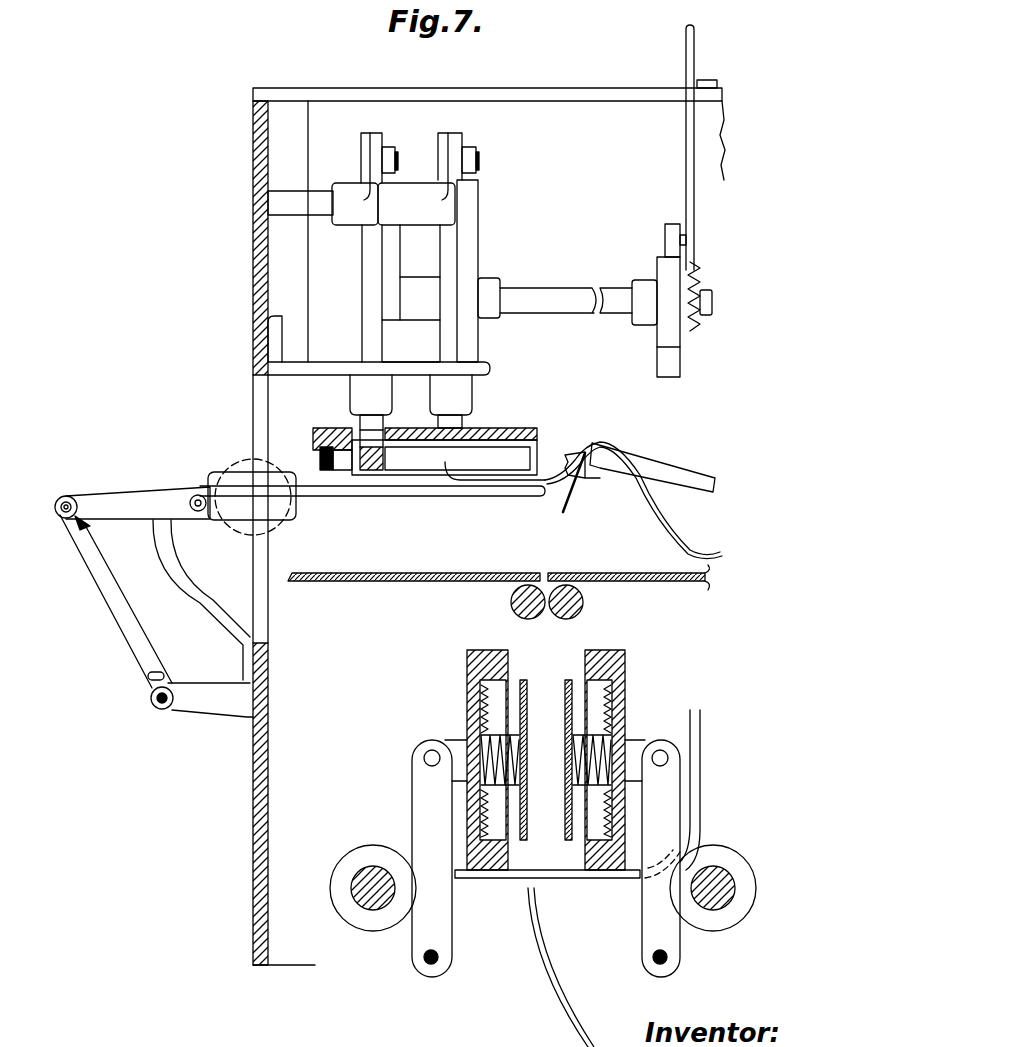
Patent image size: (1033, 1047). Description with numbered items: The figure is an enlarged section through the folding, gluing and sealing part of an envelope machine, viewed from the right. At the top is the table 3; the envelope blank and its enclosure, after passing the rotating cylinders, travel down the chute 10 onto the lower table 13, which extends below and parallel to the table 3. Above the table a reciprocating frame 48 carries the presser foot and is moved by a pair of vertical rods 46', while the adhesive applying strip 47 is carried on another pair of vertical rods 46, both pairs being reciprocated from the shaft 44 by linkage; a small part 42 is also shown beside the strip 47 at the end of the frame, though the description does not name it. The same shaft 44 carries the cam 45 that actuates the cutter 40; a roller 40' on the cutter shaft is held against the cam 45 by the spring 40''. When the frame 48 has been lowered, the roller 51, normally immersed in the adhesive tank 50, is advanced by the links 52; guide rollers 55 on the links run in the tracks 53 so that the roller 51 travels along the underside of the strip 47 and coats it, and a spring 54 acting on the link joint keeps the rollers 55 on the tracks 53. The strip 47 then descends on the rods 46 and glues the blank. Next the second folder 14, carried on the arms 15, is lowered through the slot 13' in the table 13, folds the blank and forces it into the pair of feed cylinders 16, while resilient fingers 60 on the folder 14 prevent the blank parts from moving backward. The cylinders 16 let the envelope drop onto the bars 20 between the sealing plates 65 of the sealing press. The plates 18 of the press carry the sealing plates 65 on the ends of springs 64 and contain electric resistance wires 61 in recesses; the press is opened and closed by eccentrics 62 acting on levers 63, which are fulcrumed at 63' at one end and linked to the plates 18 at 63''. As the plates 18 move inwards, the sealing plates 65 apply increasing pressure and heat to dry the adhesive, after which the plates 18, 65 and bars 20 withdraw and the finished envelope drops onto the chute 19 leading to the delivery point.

The table 3 is at (458, 99).
The chute 10 is at (315, 280).
The table 13 is at (414, 560).
The slot 13' is at (620, 566).
The folder 14 is at (572, 508).
The arms 15 is at (681, 470).
The feed cylinders 16 is at (535, 615).
The plates of the press 18 is at (470, 657).
The chute 19 is at (560, 994).
The bars 20 is at (515, 873).
The cutter 40 is at (674, 147).
The roller 40' is at (655, 240).
The spring 40'' is at (721, 306).
The stop piece 42 is at (320, 456).
The shaft 44 is at (590, 312).
The cam 45 is at (668, 352).
The vertical rods 46 is at (373, 281).
The vertical rods 46' is at (484, 271).
The adhesive applying strip 47 is at (392, 460).
The frame 48 is at (500, 428).
The adhesive tank 50 is at (240, 548).
The roller 51 is at (240, 482).
The links 52 is at (118, 492).
The tracks 53 is at (425, 496).
The spring 54 is at (85, 523).
The guide rollers 55 is at (198, 512).
The resilient fingers 60 is at (598, 442).
The electric resistance wires 61 is at (482, 698).
The eccentrics 62 is at (378, 924).
The levers 63 is at (527, 843).
The fulcrum 63' is at (557, 978).
The link point 63'' is at (528, 737).
The springs 64 is at (585, 734).
The sealing plates 65 is at (567, 682).